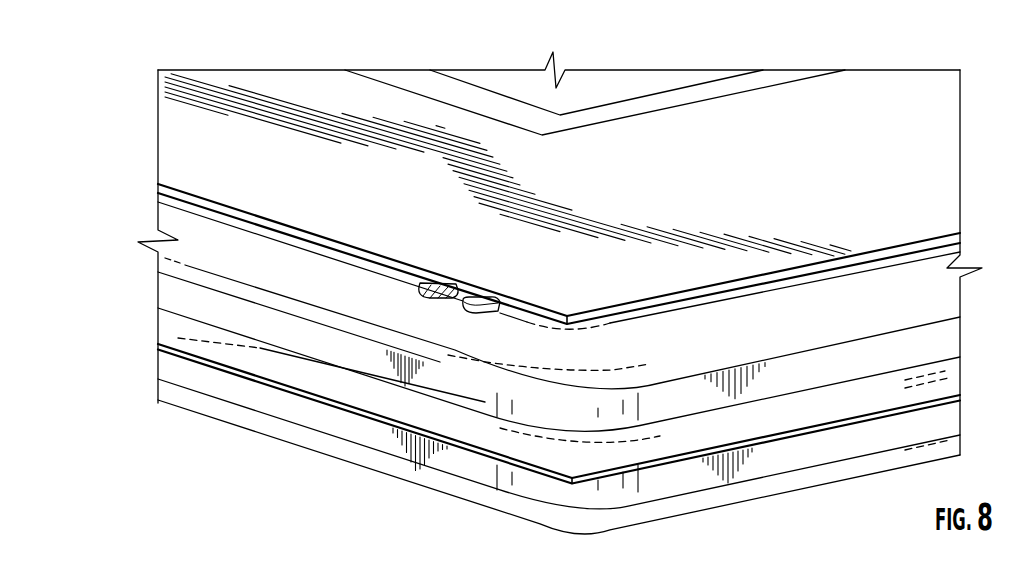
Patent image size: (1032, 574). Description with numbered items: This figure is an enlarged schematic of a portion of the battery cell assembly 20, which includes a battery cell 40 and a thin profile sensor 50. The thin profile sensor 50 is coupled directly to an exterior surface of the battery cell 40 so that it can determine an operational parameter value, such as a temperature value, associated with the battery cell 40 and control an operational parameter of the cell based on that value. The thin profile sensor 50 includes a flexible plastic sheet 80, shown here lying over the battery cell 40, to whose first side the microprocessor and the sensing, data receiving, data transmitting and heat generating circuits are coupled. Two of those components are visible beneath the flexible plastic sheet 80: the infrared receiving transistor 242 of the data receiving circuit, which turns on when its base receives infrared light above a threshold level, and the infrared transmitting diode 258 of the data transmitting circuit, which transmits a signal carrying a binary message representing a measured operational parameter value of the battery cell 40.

The battery cell assembly 20 is at (770, 60).
The battery cell 40 is at (737, 497).
The thin profile sensor 50 is at (878, 104).
The flexible plastic sheet 80 is at (596, 91).
The infrared receiving transistor 242 is at (426, 283).
The infrared transmitting diode 258 is at (477, 303).